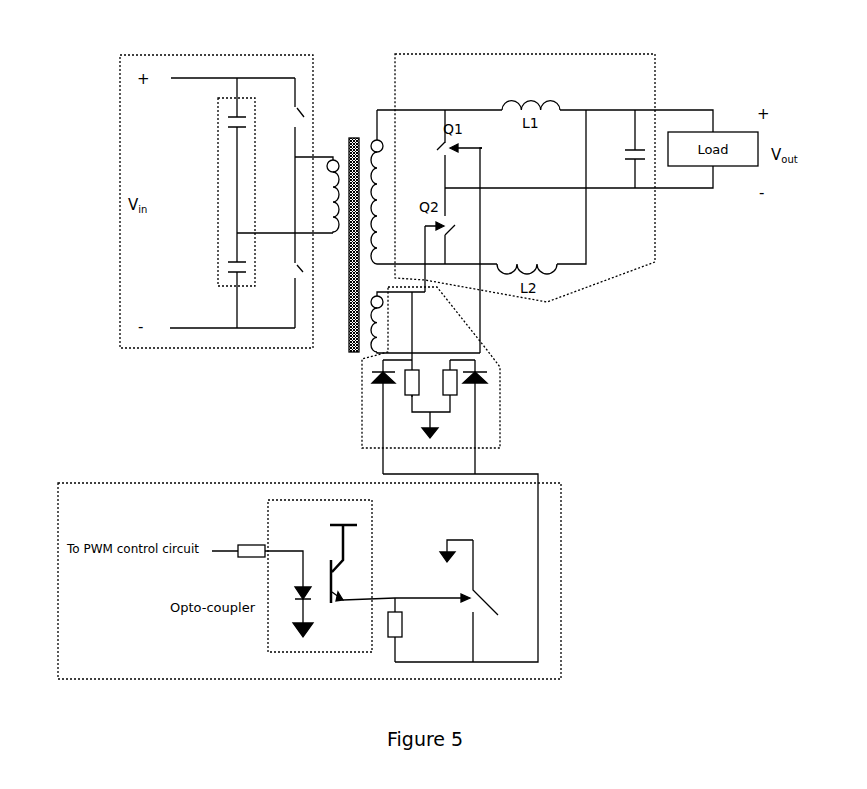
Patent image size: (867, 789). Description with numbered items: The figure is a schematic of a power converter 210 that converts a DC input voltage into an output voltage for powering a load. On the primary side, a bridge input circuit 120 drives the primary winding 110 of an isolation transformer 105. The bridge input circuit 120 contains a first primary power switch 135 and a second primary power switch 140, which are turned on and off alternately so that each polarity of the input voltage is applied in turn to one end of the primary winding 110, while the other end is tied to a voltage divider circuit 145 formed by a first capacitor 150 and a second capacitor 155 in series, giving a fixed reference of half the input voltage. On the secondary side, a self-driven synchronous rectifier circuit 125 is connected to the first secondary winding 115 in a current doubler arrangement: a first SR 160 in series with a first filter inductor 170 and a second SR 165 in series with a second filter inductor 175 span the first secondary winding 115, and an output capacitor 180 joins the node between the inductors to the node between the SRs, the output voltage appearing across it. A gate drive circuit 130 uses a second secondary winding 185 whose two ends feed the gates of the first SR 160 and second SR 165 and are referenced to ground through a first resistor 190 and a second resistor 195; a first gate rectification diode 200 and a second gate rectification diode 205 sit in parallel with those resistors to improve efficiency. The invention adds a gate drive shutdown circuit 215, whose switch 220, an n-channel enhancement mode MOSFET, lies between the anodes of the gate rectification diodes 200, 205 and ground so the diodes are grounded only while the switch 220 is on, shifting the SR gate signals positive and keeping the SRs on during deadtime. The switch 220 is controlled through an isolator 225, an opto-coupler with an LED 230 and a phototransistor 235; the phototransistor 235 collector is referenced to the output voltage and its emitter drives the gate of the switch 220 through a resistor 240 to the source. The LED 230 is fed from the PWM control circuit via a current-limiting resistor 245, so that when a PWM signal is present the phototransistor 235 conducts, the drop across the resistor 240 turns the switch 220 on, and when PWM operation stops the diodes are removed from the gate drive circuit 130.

The isolation transformer 105 is at (332, 300).
The primary winding 110 is at (310, 156).
The first secondary winding 115 is at (377, 197).
The bridge input circuit 120 is at (172, 55).
The self-driven synchronous rectifier circuit 125 is at (418, 53).
The gate drive circuit 130 is at (492, 350).
The first primary power switch 135 is at (301, 110).
The second primary power switch 140 is at (298, 272).
The voltage divider circuit 145 is at (218, 172).
The first capacitor 150 is at (228, 116).
The second capacitor 155 is at (228, 262).
The first SR 160 is at (441, 142).
The second SR 165 is at (456, 226).
The first filter inductor 170 is at (513, 100).
The second filter inductor 175 is at (522, 262).
The output capacitor 180 is at (633, 148).
The second secondary winding 185 is at (373, 352).
The first resistor 190 is at (453, 398).
The second resistor 195 is at (403, 396).
The first gate rectification diode 200 is at (483, 385).
The second gate rectification diode 205 is at (373, 375).
The power converter 210 is at (78, 189).
The gate drive shutdown circuit 215 is at (68, 482).
The switch 220 is at (445, 583).
The isolator 225 is at (268, 512).
The LED 230 is at (295, 602).
The phototransistor 235 is at (335, 580).
The resistor 240 is at (390, 638).
The current-limiting resistor 245 is at (245, 559).